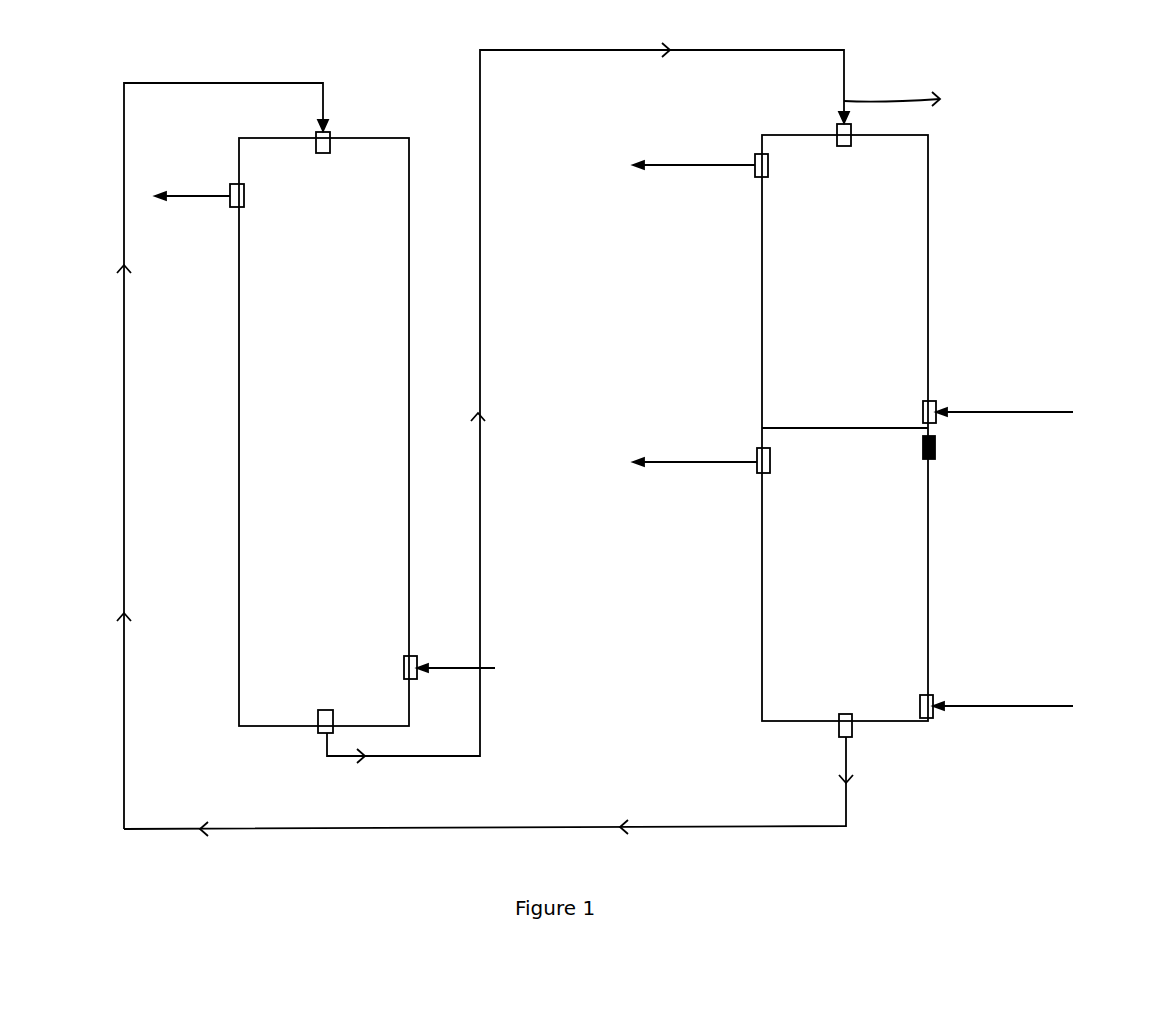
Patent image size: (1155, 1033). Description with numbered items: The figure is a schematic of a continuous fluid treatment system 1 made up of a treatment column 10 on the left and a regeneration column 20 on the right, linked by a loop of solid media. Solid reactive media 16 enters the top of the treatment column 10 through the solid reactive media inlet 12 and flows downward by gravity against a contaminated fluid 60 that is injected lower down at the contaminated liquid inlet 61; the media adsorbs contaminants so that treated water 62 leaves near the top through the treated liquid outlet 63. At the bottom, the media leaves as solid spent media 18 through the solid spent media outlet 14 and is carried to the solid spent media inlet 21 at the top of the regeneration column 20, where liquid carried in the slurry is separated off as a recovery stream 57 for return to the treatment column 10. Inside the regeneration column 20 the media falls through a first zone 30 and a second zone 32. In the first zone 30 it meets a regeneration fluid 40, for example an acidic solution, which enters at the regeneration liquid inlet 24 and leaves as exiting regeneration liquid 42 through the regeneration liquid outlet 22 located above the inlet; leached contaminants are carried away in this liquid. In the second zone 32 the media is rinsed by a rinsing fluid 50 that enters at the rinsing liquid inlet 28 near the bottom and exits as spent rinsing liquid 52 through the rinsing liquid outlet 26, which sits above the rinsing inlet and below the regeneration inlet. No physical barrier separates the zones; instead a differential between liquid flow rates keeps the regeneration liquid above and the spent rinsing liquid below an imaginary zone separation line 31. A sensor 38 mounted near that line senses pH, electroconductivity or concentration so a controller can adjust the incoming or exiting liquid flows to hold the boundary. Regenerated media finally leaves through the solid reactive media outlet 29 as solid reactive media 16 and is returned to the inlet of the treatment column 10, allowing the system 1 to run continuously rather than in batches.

The fluid treatment system 1 is at (1010, 63).
The treatment column 10 is at (324, 432).
The solid reactive media inlet 12 is at (327, 138).
The solid spent media outlet 14 is at (323, 727).
The solid reactive media 16 is at (265, 82).
The solid spent media 18 is at (345, 757).
The regeneration column 20 is at (943, 238).
The solid spent media inlet 21 is at (842, 138).
The regeneration liquid outlet 22 is at (758, 162).
The regeneration liquid inlet 24 is at (928, 407).
The rinsing liquid outlet 26 is at (760, 455).
The rinsing liquid inlet 28 is at (932, 700).
The solid reactive media outlet 29 is at (847, 725).
The first zone 30 is at (846, 281).
The imaginary zone separation line 31 is at (825, 427).
The second zone 32 is at (846, 577).
The sensor 38 is at (937, 450).
The regeneration fluid 40 is at (1004, 413).
The exiting regeneration liquid 42 is at (694, 166).
The rinsing fluid 50 is at (1003, 707).
The spent rinsing liquid 52 is at (695, 463).
The recovery stream 57 is at (892, 89).
The contaminated fluid 60 is at (456, 669).
The contaminated liquid inlet 61 is at (410, 662).
The treated water 62 is at (192, 197).
The treated liquid outlet 63 is at (238, 193).